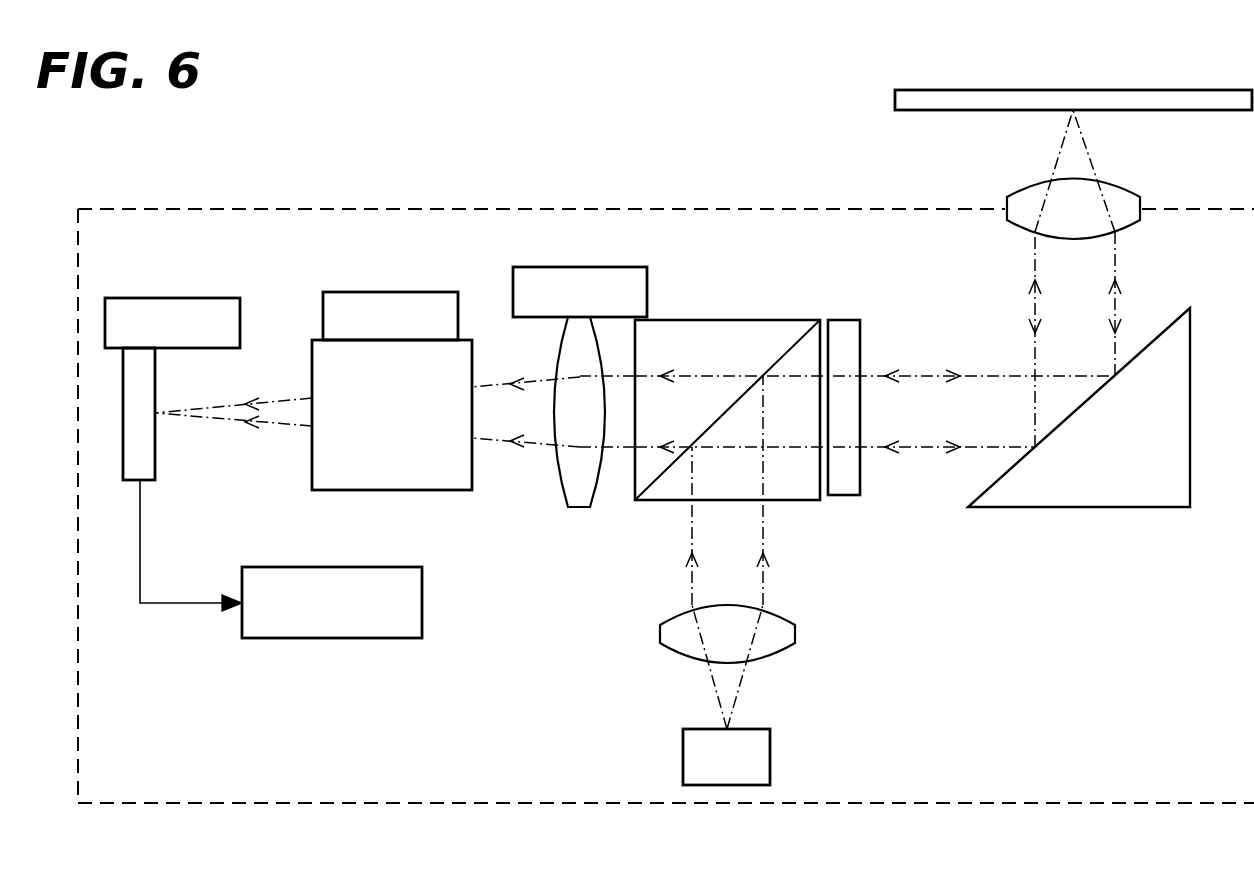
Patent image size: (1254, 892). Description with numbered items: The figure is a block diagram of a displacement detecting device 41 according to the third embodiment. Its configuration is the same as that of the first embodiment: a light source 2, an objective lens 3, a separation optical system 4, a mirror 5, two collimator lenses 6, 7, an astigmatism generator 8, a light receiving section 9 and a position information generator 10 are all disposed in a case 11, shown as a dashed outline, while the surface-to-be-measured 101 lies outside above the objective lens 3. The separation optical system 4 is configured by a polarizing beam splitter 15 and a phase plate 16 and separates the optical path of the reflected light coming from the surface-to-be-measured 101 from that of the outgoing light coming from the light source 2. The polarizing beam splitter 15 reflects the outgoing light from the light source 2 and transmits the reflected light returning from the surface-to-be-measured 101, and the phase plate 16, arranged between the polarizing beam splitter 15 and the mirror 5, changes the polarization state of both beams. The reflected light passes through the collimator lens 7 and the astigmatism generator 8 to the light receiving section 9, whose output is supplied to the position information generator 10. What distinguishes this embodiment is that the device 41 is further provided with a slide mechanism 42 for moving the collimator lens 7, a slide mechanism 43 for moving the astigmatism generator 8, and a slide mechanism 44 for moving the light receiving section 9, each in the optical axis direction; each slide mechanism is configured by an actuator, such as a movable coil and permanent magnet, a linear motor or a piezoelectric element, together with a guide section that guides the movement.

The light source 2 is at (770, 753).
The objective lens 3 is at (1123, 196).
The separation optical system 4 is at (757, 430).
The mirror 5 is at (1153, 507).
The collimator lens 6 is at (795, 628).
The collimator lens 7 is at (583, 507).
The astigmatism generator 8 is at (390, 490).
The light receiving section 9 is at (156, 469).
The position information generator 10 is at (352, 567).
The case 11 is at (590, 208).
The polarizing beam splitter 15 is at (725, 320).
The phase plate 16 is at (843, 320).
The displacement detecting device 41 is at (684, 194).
The slide mechanism 42 is at (575, 267).
The slide mechanism 43 is at (410, 292).
The slide mechanism 44 is at (195, 298).
The surface-to-be-measured 101 is at (924, 112).